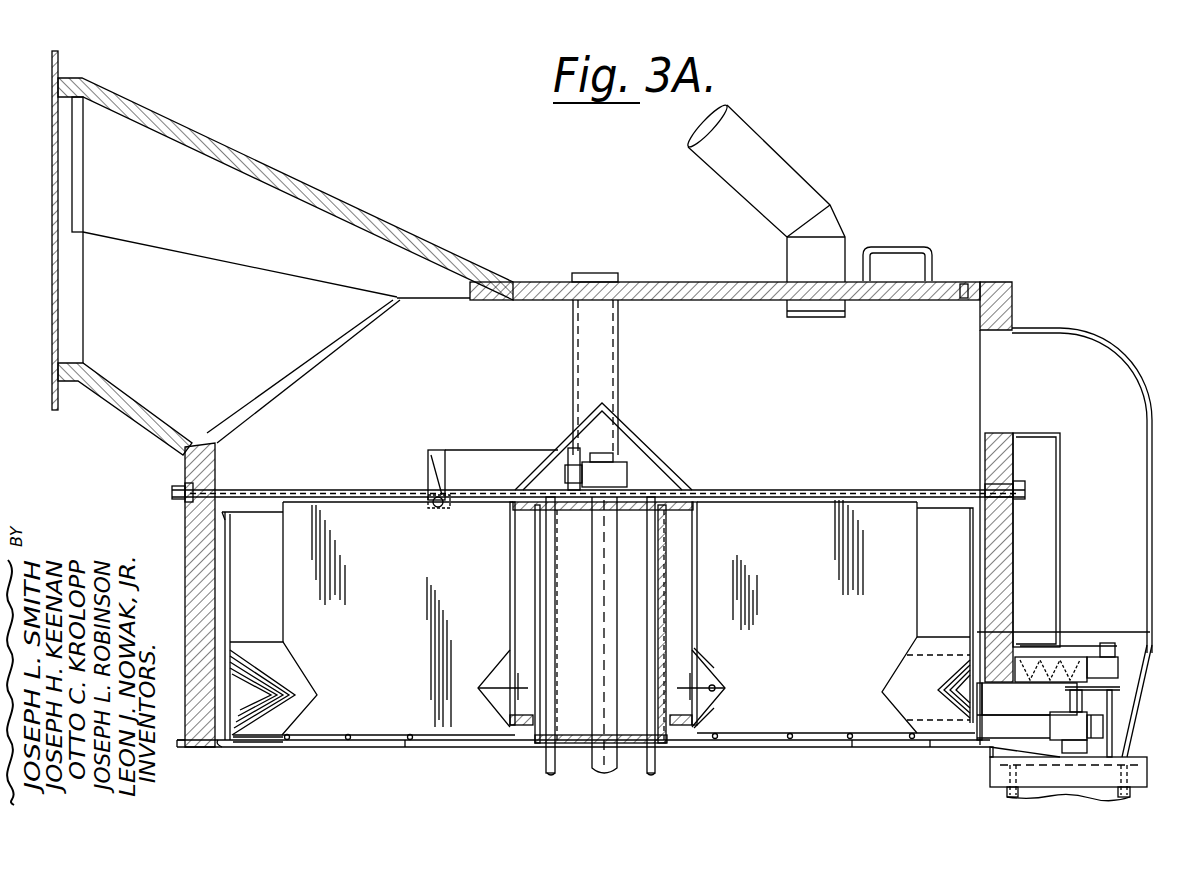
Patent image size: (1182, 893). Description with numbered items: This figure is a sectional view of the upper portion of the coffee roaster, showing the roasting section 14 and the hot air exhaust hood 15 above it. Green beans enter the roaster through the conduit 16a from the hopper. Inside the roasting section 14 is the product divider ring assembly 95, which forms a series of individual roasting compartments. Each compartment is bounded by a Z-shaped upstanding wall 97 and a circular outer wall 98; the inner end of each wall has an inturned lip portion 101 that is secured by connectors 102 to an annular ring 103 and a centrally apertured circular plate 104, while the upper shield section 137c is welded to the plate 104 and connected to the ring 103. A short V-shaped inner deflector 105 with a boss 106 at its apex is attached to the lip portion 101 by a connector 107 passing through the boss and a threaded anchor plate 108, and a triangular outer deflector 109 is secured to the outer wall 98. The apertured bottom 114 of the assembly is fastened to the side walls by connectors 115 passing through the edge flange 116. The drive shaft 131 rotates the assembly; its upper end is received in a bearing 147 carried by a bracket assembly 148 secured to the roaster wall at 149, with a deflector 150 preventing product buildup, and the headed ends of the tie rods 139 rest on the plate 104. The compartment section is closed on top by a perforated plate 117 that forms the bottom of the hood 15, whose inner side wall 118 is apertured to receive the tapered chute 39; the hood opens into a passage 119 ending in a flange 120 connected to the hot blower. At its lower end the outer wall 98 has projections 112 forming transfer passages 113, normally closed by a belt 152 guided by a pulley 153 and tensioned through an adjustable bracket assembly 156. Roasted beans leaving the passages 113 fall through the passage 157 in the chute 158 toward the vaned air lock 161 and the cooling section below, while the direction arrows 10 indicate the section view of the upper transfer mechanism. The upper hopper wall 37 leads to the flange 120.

The flange 120 is at (58, 63).
The upper hopper wall 37 is at (338, 203).
The conduit 16a is at (773, 148).
The hot air exhaust hood 15 is at (1030, 291).
The tapered chute 39 is at (1130, 328).
The passage 119 is at (174, 380).
The roasting section 14 is at (181, 515).
The product divider ring assembly 95 is at (247, 530).
The Z-shaped upstanding wall 97 is at (345, 501).
The bracket assembly 148 is at (530, 428).
The bracket securing point 149 is at (437, 481).
The deflector 150 is at (641, 442).
The bearing 147 is at (630, 475).
The perforated plate 117 is at (893, 490).
The inner side wall 118 is at (985, 455).
The direction arrow 10 is at (1162, 656).
The circular outer wall 98 is at (232, 594).
The connectors 102 is at (512, 507).
The centrally apertured circular plate 104 is at (697, 516).
The inturned lip portion 101 is at (695, 553).
The drive shaft 131 is at (593, 592).
The upper shield section 137c is at (693, 598).
The outer deflector 109 is at (296, 665).
The inner deflector 105 is at (503, 660).
The threaded anchor plate 108 is at (694, 632).
The connector 107 is at (716, 684).
The boss 106 is at (716, 697).
The edge flange 116 is at (400, 712).
The adjustable bracket assembly 156 is at (1074, 650).
The chute 158 is at (1128, 668).
The pulley 153 is at (1000, 724).
The belt 152 is at (1100, 727).
The bottom 114 is at (383, 746).
The connectors 115 is at (405, 749).
The tie rods 139 is at (648, 772).
The annular ring 103 is at (678, 728).
The transfer passages 113 is at (930, 747).
The projections 112 is at (940, 750).
The passage 157 is at (1020, 752).
The vaned air lock 161 is at (1005, 792).